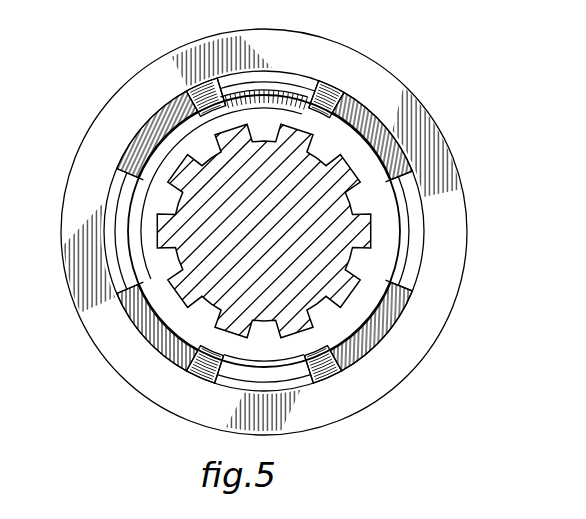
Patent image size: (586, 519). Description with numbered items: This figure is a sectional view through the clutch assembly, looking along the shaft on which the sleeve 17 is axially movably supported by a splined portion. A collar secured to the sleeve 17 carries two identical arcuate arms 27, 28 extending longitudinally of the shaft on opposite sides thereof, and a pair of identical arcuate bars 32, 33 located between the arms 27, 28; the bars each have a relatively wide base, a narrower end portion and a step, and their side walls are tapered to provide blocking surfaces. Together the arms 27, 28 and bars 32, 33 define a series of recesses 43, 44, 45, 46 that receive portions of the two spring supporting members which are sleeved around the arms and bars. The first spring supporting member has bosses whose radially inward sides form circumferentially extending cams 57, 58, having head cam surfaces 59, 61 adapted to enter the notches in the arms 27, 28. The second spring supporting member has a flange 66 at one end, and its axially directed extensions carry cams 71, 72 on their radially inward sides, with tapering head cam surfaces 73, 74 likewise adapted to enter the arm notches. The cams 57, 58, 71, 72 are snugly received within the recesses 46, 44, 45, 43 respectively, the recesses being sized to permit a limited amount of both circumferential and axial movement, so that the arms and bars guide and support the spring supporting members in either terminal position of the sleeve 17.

The sleeve 17 is at (160, 307).
The arcuate arm 27 is at (286, 83).
The arcuate arm 28 is at (297, 382).
The arcuate bar 32 is at (108, 263).
The arcuate bar 33 is at (415, 240).
The recess 43 is at (150, 153).
The recess 44 is at (177, 297).
The recess 45 is at (375, 310).
The recess 46 is at (367, 140).
The cam 57 is at (393, 150).
The cam 58 is at (165, 297).
The head cam surface 59 is at (335, 100).
The head cam surface 61 is at (197, 363).
The flange 66 is at (88, 150).
The cam 71 is at (330, 358).
The cam 72 is at (177, 100).
The head cam surface 73 is at (328, 368).
The head cam surface 74 is at (200, 97).